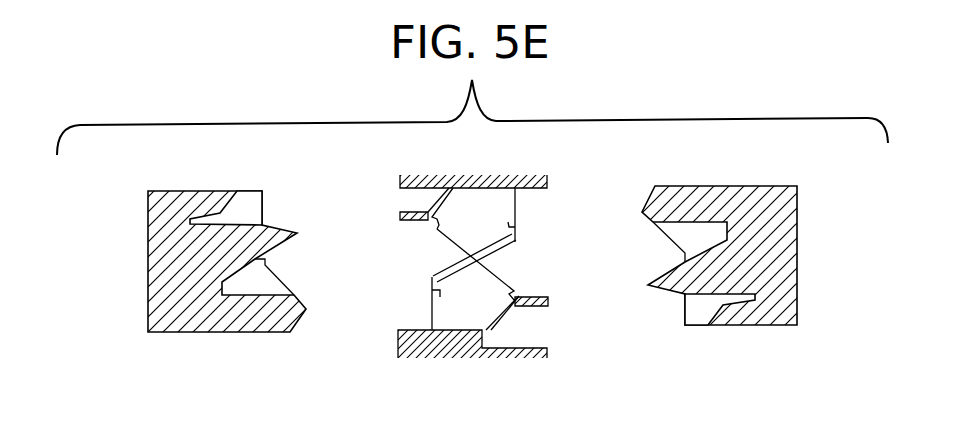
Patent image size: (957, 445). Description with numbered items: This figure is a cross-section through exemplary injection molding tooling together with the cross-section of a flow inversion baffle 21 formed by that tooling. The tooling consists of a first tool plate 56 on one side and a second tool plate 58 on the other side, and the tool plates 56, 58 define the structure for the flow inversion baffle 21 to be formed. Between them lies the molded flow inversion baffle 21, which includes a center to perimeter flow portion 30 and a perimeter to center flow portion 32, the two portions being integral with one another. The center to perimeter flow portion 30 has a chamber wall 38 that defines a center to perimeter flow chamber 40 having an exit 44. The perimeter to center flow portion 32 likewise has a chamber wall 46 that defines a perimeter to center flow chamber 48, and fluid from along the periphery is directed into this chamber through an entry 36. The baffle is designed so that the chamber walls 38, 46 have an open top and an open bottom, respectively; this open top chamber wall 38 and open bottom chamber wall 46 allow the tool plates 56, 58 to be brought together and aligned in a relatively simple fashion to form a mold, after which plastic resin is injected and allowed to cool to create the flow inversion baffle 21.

The flow inversion baffle 21 is at (435, 262).
The center to perimeter flow portion 30 is at (523, 205).
The perimeter to center flow portion 32 is at (568, 300).
The entry 36 is at (518, 296).
The chamber wall 38 is at (402, 212).
The center to perimeter flow chamber 40 is at (498, 207).
The exit 44 is at (440, 232).
The chamber wall 46 is at (516, 302).
The perimeter to center flow chamber 48 is at (457, 307).
The first tool plate 56 is at (176, 262).
The second tool plate 58 is at (778, 256).